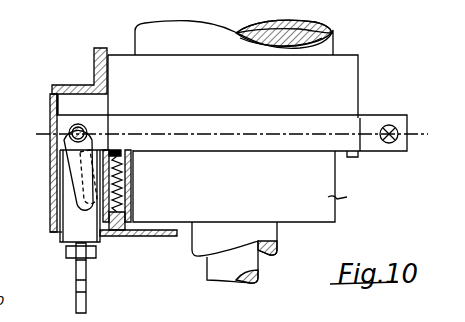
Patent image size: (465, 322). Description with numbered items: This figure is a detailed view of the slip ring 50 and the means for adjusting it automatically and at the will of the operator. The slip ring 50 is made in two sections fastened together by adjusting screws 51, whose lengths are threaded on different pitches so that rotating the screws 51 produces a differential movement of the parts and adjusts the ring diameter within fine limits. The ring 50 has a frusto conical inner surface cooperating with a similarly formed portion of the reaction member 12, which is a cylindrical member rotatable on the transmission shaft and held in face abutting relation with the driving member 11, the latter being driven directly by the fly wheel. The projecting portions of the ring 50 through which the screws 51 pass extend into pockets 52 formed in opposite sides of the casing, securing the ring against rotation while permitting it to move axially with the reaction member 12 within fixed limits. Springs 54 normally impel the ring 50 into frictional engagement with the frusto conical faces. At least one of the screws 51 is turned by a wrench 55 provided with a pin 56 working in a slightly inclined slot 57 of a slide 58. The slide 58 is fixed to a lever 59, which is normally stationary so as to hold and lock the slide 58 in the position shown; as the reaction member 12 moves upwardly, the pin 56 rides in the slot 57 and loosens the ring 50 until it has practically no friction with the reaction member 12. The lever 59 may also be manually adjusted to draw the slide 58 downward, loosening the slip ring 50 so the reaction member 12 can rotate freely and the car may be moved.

The driving member 11 is at (34, 131).
The reaction member 12 is at (350, 77).
The slip ring 50 is at (246, 127).
The adjusting screws 51 is at (84, 128).
The pockets 52 is at (78, 99).
The springs 54 is at (125, 190).
The wrench 55 is at (80, 170).
The pin 56 is at (80, 196).
The slot 57 is at (79, 179).
The slide 58 is at (97, 250).
The lever 59 is at (86, 304).